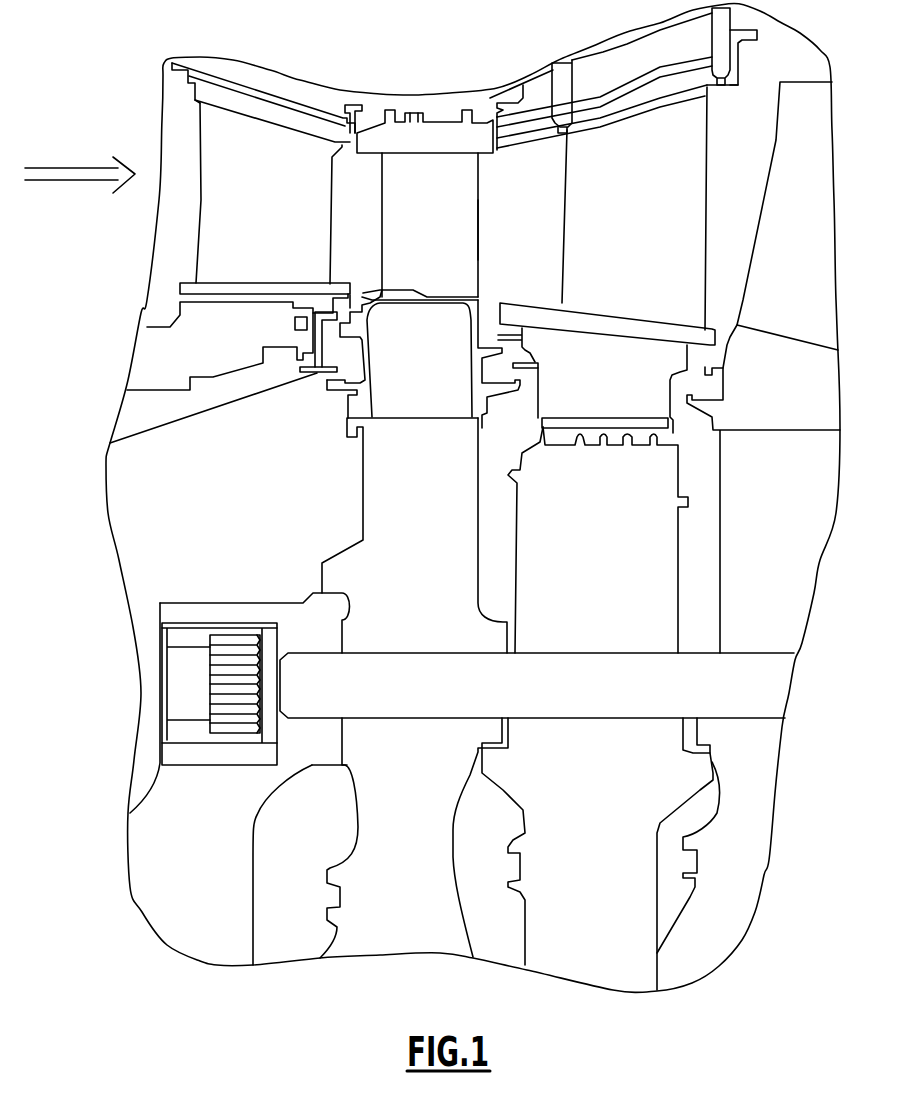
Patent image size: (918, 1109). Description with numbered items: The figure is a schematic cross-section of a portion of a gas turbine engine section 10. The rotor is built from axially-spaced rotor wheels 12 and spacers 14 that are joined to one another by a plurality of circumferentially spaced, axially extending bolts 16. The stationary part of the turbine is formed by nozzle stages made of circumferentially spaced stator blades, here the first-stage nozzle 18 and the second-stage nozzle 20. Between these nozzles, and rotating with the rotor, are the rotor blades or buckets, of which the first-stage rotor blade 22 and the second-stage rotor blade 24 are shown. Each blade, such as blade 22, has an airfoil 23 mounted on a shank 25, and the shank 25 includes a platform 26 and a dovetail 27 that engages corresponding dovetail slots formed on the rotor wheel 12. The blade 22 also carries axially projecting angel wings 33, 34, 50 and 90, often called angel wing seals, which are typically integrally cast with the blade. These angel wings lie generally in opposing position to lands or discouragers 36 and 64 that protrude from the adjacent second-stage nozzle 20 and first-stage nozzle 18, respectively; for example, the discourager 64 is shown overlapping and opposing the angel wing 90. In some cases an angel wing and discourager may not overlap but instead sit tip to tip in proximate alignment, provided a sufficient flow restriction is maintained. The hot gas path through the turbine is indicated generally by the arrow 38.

The gas turbine engine section 10 is at (397, 76).
The rotor wheel 12 is at (414, 866).
The spacer 14 is at (614, 866).
The bolt 16 is at (752, 688).
The first-stage nozzle 18 is at (275, 230).
The second-stage nozzle 20 is at (649, 222).
The first-stage rotor blade 22 is at (440, 237).
The airfoil 23 is at (479, 231).
The second-stage rotor blade 24 is at (805, 276).
The shank 25 is at (434, 379).
The platform 26 is at (427, 298).
The dovetail 27 is at (430, 532).
The angel wing 33 is at (490, 347).
The angel wing 34 is at (489, 387).
The discourager 36 is at (527, 355).
The hot gas path arrow 38 is at (88, 192).
The angel wing 50 is at (360, 300).
The discourager 64 is at (317, 373).
The angel wing 90 is at (345, 388).